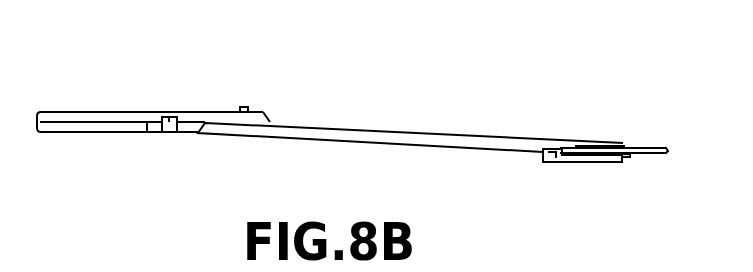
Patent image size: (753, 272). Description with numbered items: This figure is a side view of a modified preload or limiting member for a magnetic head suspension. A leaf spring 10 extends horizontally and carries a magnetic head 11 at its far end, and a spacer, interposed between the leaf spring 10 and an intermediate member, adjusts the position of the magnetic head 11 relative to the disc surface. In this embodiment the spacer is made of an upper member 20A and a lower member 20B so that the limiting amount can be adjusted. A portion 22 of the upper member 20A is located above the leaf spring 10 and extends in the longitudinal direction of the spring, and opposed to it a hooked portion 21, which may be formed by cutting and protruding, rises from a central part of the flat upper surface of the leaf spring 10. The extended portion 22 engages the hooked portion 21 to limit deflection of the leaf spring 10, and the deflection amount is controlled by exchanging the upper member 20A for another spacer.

The leaf spring 10 is at (382, 133).
The magnetic head 11 is at (607, 143).
The upper member of spacer 20A is at (132, 113).
The lower member of spacer 20B is at (143, 133).
The hooked portion 21 is at (243, 108).
The extended portion of spacer 22 is at (263, 113).